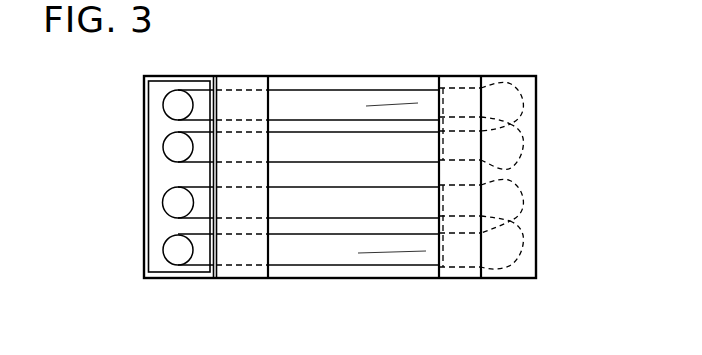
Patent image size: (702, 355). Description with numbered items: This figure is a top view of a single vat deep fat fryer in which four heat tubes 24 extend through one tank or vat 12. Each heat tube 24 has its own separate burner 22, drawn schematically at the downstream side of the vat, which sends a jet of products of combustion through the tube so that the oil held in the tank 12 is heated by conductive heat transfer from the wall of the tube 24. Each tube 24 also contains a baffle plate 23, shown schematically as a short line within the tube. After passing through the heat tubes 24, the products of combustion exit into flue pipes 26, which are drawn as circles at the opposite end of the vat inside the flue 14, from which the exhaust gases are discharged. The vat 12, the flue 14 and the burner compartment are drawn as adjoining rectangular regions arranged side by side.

The tank 12 is at (362, 265).
The flue 14 is at (220, 104).
The burner 22 is at (522, 112).
The baffle plate 23 is at (393, 106).
The heat tube 24 is at (420, 102).
The flue pipe 26 is at (166, 110).